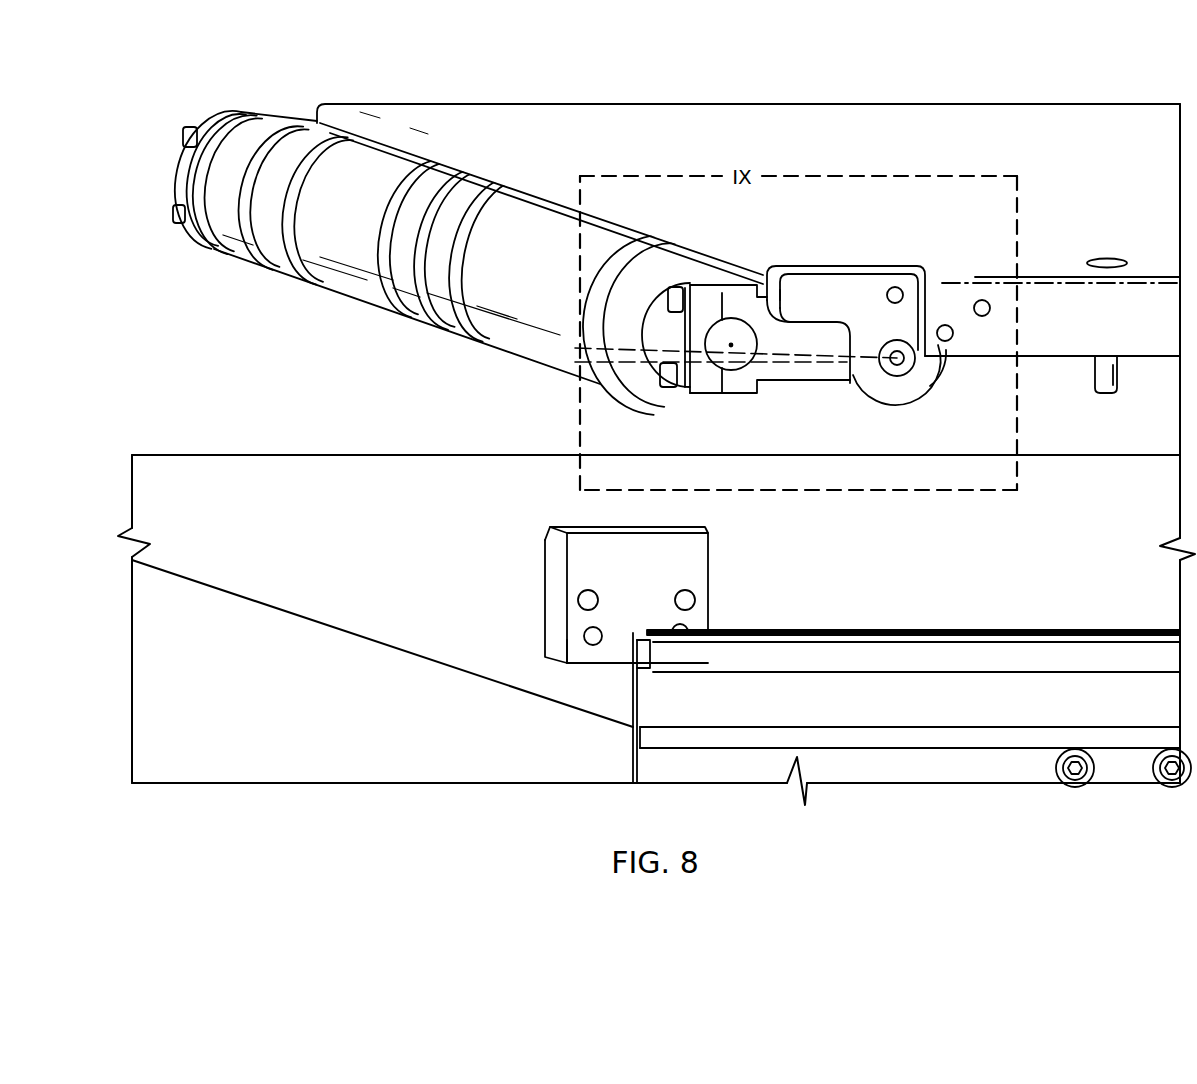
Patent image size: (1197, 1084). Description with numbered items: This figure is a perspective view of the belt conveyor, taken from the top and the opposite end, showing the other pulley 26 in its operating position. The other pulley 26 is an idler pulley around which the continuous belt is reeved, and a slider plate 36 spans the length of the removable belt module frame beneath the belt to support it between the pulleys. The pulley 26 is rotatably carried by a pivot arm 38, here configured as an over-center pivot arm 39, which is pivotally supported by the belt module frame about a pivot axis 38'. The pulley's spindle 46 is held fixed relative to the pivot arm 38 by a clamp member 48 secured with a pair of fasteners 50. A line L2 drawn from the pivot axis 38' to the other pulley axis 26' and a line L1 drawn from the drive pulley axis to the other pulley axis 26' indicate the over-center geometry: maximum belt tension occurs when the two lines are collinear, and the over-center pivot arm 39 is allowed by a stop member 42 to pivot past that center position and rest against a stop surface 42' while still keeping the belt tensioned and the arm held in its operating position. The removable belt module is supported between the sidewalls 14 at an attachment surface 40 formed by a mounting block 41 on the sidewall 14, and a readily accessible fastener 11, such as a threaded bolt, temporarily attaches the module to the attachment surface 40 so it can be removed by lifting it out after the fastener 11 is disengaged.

The fastener 11 is at (1105, 394).
The sidewall 14 is at (925, 579).
The other pulley 26 is at (424, 263).
The other pulley axis 26' is at (693, 395).
The slider plate 36 is at (525, 136).
The pivot arm 38 is at (884, 395).
The pivot axis 38' is at (903, 394).
The over-center pivot arm 39 is at (790, 383).
The attachment surface 40 is at (690, 563).
The mounting block 41 is at (700, 586).
The stop member 42 is at (878, 296).
The stop surface 42' is at (816, 280).
The spindle 46 is at (734, 333).
The clamp member 48 is at (678, 333).
The fastener 50 is at (668, 298).
The line L1 is at (820, 364).
The line L2 is at (877, 358).